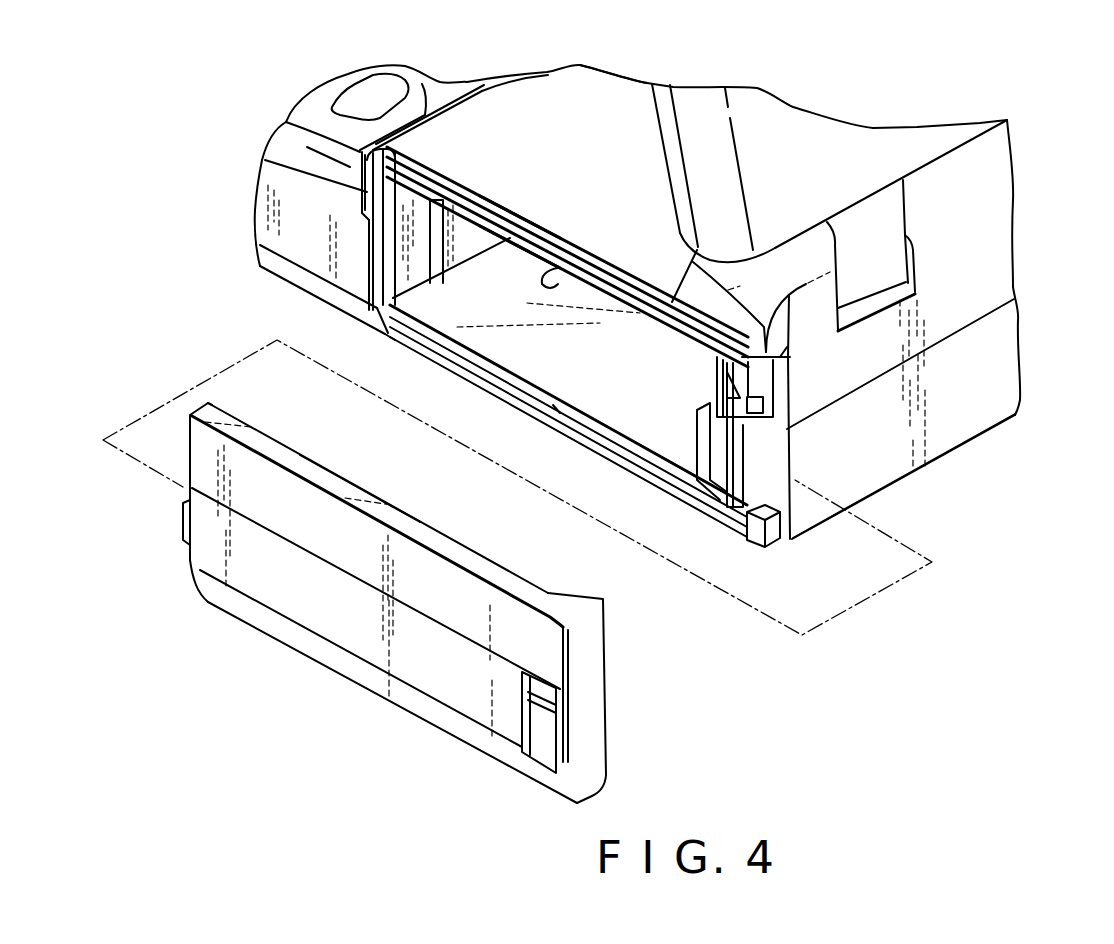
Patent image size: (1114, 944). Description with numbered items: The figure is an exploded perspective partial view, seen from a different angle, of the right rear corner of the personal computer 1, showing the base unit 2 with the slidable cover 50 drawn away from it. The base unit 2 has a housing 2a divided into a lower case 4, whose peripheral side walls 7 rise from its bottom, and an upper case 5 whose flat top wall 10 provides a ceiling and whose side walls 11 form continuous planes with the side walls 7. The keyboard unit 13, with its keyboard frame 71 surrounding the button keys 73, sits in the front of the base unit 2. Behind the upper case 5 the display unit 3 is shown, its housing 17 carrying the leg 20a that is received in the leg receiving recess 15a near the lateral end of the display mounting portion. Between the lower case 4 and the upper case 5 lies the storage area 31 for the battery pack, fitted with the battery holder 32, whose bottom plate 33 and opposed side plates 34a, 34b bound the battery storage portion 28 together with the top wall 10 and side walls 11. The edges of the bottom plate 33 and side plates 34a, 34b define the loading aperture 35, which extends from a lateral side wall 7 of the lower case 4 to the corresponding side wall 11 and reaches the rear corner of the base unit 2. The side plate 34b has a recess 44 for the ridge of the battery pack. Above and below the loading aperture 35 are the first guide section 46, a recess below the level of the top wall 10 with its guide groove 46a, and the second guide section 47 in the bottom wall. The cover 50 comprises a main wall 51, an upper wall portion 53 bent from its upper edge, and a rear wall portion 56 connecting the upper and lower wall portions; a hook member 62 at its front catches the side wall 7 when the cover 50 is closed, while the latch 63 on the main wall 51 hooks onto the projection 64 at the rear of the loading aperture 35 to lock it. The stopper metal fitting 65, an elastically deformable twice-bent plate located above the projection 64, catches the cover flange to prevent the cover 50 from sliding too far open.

The personal computer 1 is at (1013, 168).
The base unit 2 is at (977, 403).
The housing 2a is at (1007, 330).
The display unit 3 is at (823, 143).
The lower case 4 is at (256, 220).
The upper case 5 is at (483, 100).
The side walls 7 is at (323, 247).
The top wall 10 is at (562, 88).
The side walls 11 is at (373, 188).
The keyboard unit 13 is at (300, 113).
The leg receiving recess 15a is at (915, 303).
The housing 17 is at (753, 110).
The leg 20a is at (883, 218).
The battery storage portion 28 is at (553, 348).
The storage area 31 is at (560, 277).
The battery holder 32 is at (590, 393).
The bottom plate 33 is at (632, 443).
The side plate 34a is at (453, 213).
The side plate 34b is at (710, 447).
The loading aperture 35 is at (493, 332).
The recess 44 is at (707, 410).
The first guide section 46 is at (527, 240).
The guide groove 46a is at (520, 213).
The second guide section 47 is at (670, 490).
The cover 50 is at (338, 688).
The main wall 51 is at (442, 687).
The upper wall portion 53 is at (455, 553).
The rear wall portion 56 is at (593, 705).
The hook member 62 is at (182, 520).
The latch 63 is at (540, 748).
The projection 64 is at (783, 533).
The stopper metal fitting 65 is at (768, 405).
The keyboard frame 71 is at (277, 160).
The button keys 73 is at (373, 88).